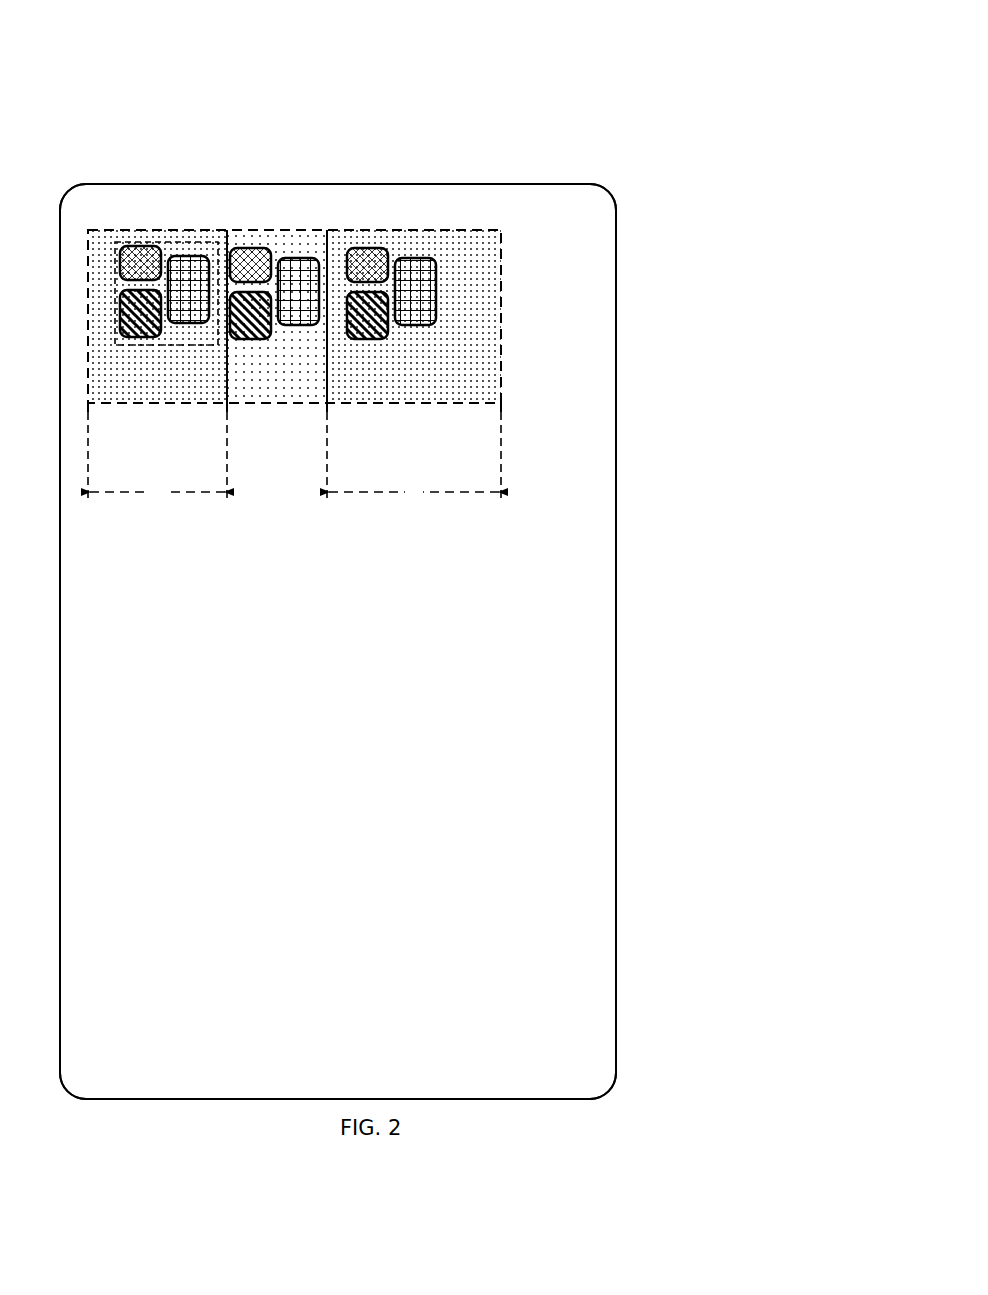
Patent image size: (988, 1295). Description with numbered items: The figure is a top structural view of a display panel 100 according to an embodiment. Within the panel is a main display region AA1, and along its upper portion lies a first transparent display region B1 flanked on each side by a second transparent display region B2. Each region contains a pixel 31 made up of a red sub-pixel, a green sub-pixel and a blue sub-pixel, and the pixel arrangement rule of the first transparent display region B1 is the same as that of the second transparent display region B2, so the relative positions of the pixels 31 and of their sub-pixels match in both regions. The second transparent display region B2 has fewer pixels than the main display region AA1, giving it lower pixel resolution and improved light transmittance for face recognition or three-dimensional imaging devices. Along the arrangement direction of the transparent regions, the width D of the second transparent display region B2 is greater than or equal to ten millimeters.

The display panel 100 is at (543, 78).
The main display region AA1 is at (338, 641).
The pixel 31 is at (152, 243).
The first transparent display region B1 is at (293, 238).
The second transparent display region B2 is at (200, 233).
The width of the second transparent display region D is at (294, 458).